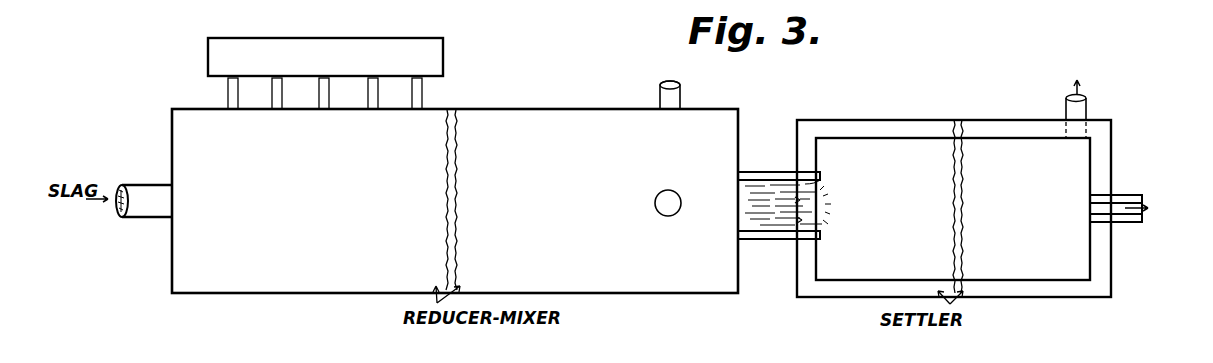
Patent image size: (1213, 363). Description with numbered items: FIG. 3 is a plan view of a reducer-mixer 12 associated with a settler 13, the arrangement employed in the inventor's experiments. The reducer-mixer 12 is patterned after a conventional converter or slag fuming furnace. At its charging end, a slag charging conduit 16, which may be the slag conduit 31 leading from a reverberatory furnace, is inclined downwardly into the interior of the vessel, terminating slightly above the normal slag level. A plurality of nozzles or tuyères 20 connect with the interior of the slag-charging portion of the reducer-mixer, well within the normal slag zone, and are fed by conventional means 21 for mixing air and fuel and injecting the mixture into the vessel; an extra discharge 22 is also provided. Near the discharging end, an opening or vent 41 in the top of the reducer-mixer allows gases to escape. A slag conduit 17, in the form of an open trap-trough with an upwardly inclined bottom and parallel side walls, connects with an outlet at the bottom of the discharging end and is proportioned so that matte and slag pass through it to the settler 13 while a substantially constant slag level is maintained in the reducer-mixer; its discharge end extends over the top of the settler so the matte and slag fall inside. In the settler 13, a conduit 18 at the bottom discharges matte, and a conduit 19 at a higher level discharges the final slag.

The reducer-mixer 12 is at (463, 117).
The settler 13 is at (969, 120).
The slag charging conduit 16 is at (138, 180).
The slag conduit 31 is at (160, 164).
The slag conduit 17 is at (762, 176).
The conduit 18 is at (1080, 107).
The conduit 19 is at (1118, 197).
The nozzles or tuyères 20 is at (273, 95).
The means for mixing air and fuel 21 is at (445, 62).
The extra discharge 22 is at (679, 93).
The opening or vent 41 is at (672, 198).